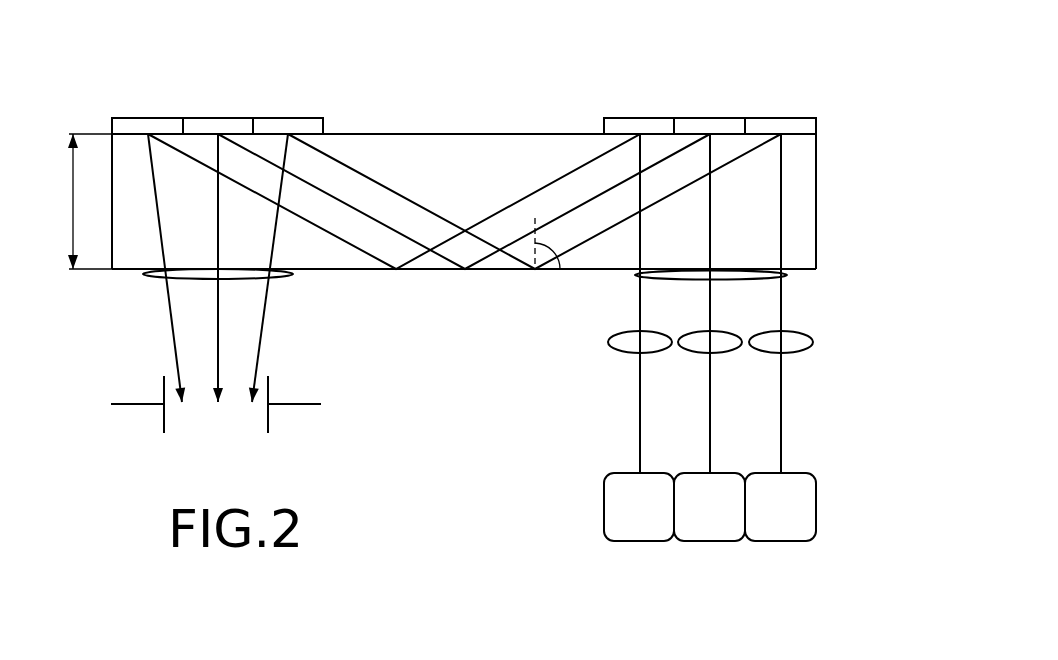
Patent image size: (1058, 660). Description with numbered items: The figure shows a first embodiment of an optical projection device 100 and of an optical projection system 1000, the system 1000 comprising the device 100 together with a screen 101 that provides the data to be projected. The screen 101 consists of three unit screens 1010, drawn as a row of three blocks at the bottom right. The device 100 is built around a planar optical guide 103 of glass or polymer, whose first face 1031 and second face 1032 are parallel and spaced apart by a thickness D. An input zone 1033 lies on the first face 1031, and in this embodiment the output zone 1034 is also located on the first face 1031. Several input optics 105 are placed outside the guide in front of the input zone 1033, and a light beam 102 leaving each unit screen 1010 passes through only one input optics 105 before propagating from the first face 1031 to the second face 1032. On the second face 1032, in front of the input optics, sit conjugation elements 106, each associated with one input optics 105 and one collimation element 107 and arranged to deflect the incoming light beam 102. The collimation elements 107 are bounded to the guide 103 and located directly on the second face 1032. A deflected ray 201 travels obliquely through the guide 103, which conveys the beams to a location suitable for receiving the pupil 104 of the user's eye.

The optical projection device 100 is at (834, 93).
The screen 101 is at (788, 568).
The light beam 102 is at (640, 445).
The planar optical guide 103 is at (802, 183).
The pupil 104 is at (285, 434).
The input optics 105 is at (657, 346).
The conjugation element 106 is at (781, 130).
The collimation element 107 is at (148, 130).
The light ray 201 is at (572, 170).
The optical projection system 1000 is at (439, 533).
The unit screen 1010 is at (773, 525).
The first face 1031 is at (800, 270).
The second face 1032 is at (450, 133).
The input zone 1033 is at (639, 272).
The output zone 1034 is at (160, 277).